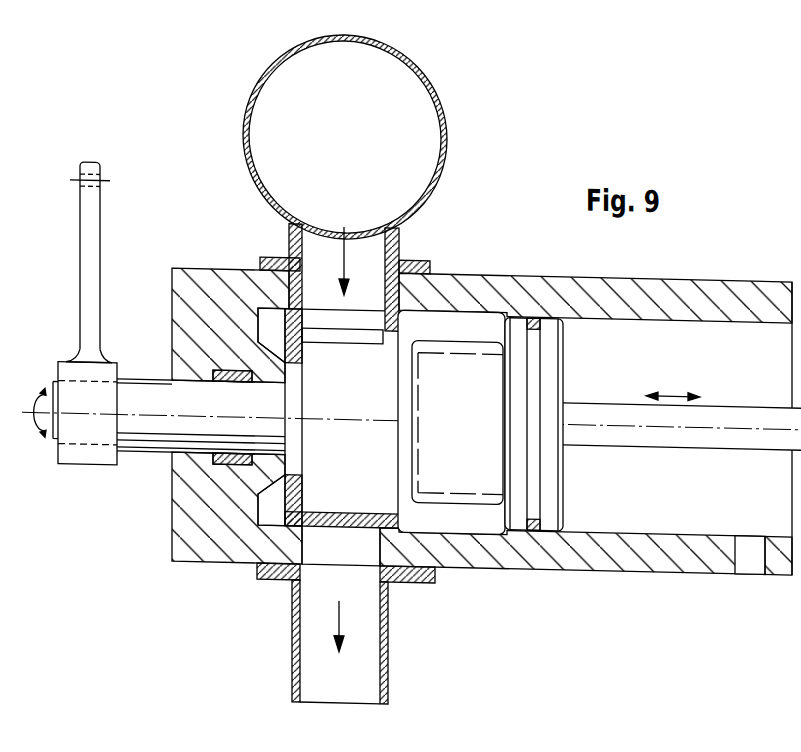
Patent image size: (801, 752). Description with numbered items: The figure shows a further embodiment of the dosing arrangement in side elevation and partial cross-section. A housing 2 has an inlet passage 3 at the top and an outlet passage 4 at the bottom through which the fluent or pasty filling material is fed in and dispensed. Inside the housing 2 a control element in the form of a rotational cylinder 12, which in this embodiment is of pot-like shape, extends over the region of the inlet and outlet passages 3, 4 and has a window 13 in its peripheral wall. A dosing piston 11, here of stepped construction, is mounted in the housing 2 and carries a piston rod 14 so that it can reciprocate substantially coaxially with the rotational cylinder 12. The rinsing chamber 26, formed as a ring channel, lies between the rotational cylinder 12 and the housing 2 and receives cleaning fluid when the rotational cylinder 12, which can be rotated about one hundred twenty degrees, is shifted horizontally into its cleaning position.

The housing 2 is at (635, 556).
The inlet passage 3 is at (323, 282).
The outlet passage 4 is at (387, 585).
The dosing piston 11 is at (518, 501).
The rotational cylinder 12 is at (327, 527).
The window 13 is at (358, 330).
The piston rod 14 is at (746, 414).
The rinsing chamber 26 is at (270, 322).